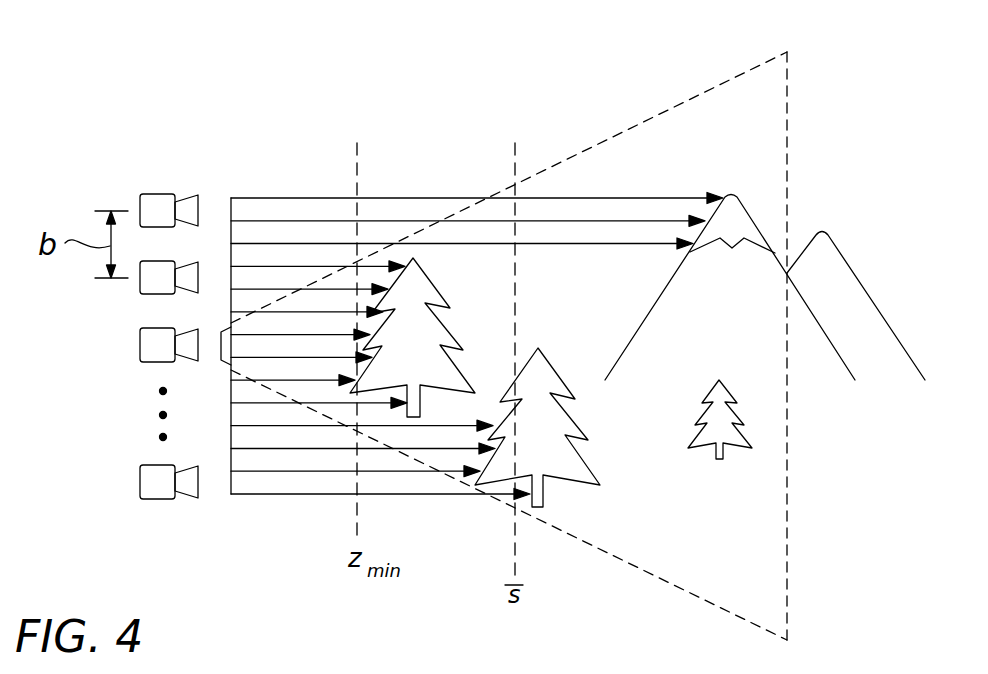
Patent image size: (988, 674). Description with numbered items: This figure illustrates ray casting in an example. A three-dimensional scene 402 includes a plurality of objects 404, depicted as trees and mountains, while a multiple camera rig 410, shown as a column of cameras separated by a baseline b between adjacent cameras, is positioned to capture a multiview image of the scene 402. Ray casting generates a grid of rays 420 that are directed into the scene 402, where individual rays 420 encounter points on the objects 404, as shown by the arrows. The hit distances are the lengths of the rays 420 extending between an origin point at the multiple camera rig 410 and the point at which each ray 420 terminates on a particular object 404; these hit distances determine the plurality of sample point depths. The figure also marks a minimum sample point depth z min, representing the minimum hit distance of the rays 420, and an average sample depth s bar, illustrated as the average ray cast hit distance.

The 3D scene 402 is at (812, 57).
The objects 404 is at (766, 192).
The multiple camera rig 410 is at (165, 170).
The rays 420 is at (301, 178).